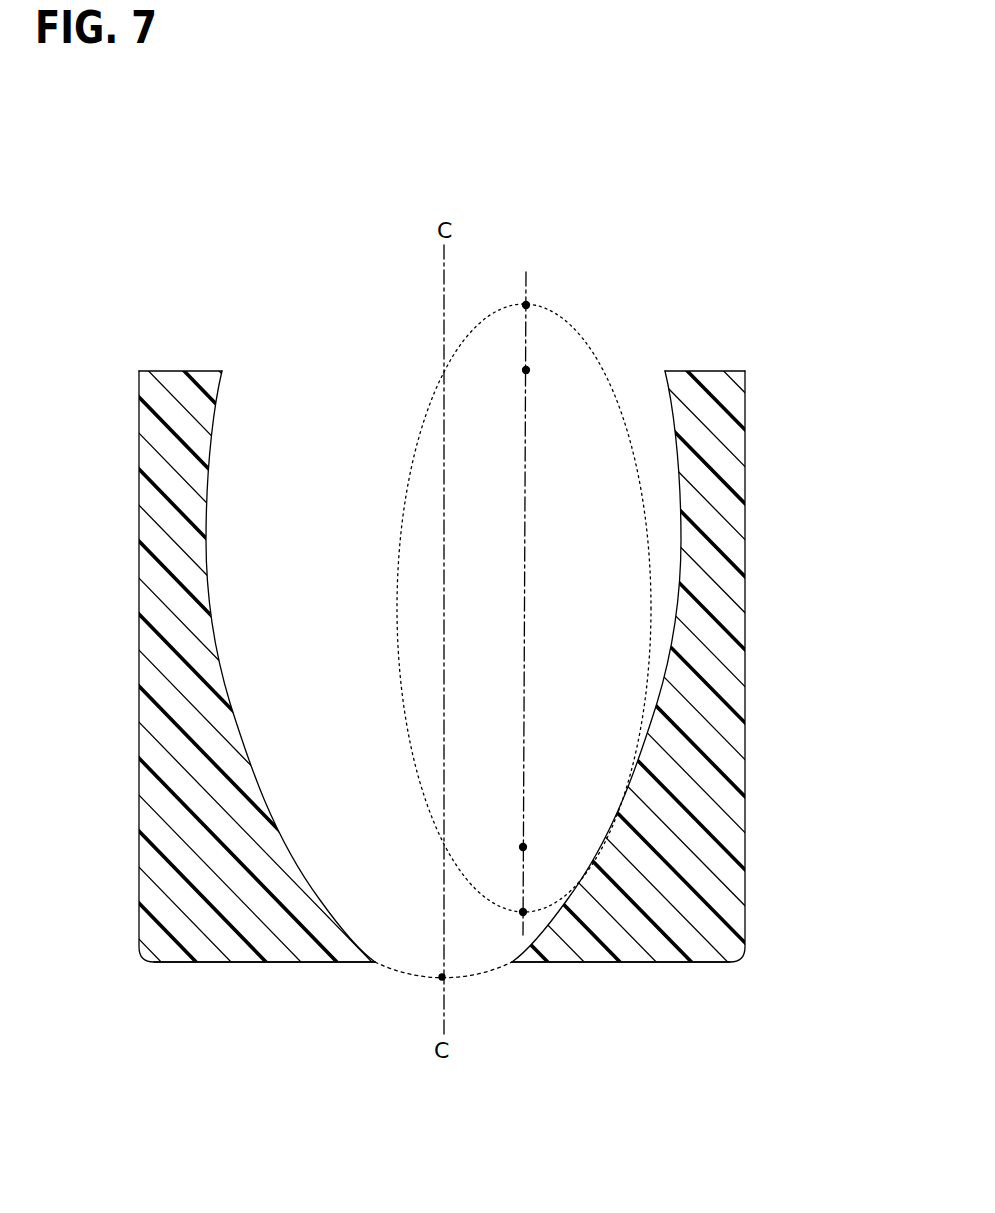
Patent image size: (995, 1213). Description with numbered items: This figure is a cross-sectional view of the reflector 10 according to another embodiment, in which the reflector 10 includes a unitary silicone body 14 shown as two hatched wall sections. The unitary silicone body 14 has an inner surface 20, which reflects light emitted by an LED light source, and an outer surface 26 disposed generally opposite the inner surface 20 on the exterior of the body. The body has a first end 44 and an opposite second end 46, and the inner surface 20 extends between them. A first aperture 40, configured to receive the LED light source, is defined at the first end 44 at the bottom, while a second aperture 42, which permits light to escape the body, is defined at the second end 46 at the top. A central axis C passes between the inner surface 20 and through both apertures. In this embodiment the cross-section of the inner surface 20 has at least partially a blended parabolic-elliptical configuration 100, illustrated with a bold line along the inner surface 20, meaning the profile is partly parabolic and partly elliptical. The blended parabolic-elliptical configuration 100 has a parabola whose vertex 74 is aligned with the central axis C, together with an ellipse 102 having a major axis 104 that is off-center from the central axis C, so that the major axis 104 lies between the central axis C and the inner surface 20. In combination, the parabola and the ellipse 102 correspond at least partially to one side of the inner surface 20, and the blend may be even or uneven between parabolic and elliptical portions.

The reflector 10 is at (762, 297).
The unitary silicone body 14 is at (690, 754).
The inner surface 20 is at (262, 806).
The outer surface 26 is at (139, 887).
The first aperture 40 is at (413, 960).
The second aperture 42 is at (243, 368).
The first end 44 is at (505, 965).
The second end 46 is at (665, 371).
The vertex 74 is at (440, 980).
The blended parabolic-elliptical configuration 100 is at (578, 836).
The ellipse 102 is at (425, 418).
The major axis 104 is at (522, 420).